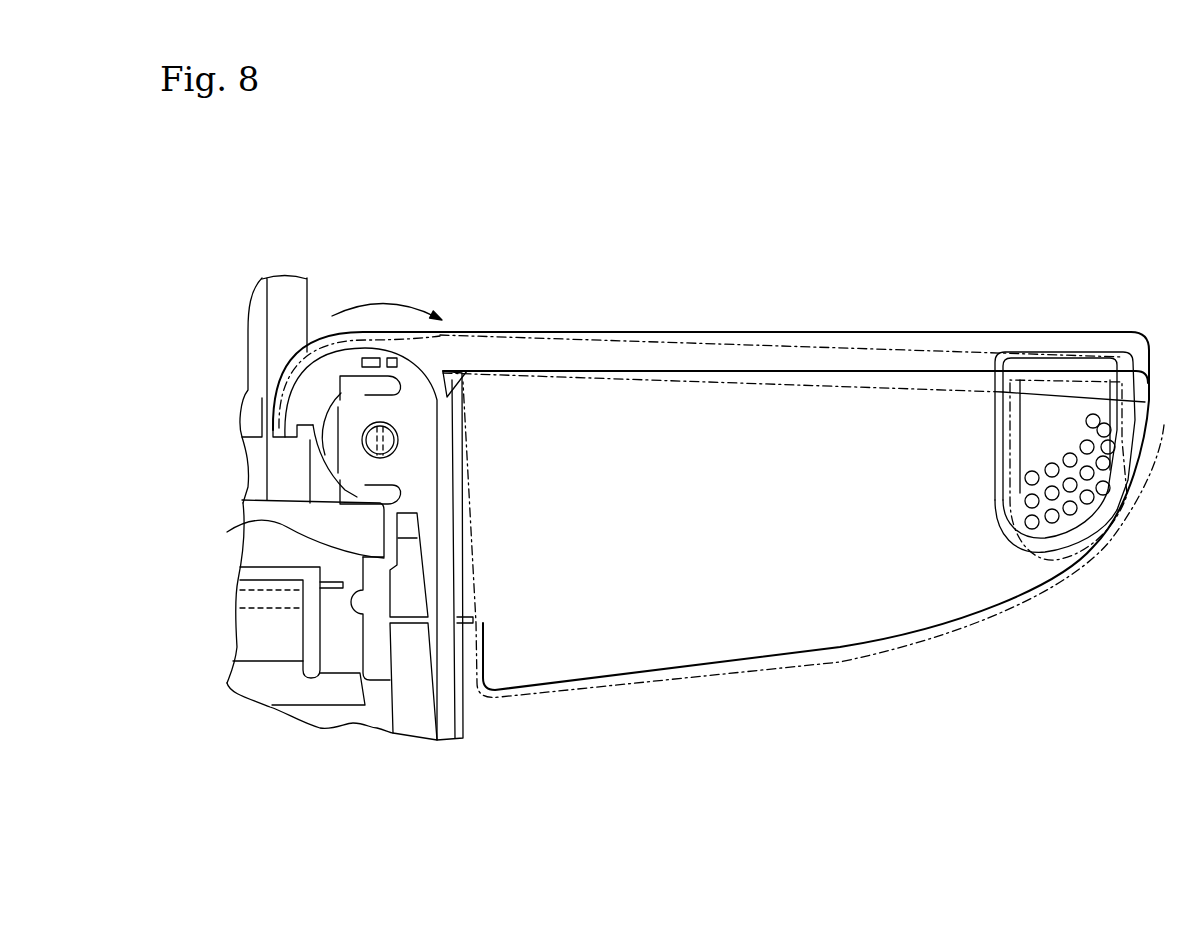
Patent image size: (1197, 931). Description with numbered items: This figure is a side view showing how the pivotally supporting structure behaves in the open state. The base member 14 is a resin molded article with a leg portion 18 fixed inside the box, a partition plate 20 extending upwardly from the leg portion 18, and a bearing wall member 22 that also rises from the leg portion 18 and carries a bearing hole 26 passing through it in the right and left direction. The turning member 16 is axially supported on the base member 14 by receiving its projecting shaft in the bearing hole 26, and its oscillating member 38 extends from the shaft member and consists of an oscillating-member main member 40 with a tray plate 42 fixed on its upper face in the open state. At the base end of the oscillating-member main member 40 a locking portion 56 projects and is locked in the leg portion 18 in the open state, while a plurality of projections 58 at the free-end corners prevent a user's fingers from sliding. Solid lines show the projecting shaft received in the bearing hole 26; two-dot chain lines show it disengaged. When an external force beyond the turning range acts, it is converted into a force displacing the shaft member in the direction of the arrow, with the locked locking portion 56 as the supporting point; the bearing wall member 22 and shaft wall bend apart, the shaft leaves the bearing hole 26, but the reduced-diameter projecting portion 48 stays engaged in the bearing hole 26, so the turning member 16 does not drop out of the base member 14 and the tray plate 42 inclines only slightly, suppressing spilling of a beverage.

The base member 14 is at (250, 250).
The turning member 16 is at (538, 228).
The leg portion 18 is at (467, 717).
The partition plate 20 is at (285, 302).
The bearing wall member 22 is at (300, 512).
The bearing hole 26 is at (367, 447).
The oscillating member 38 is at (1178, 243).
The oscillating-member main member 40 is at (1150, 425).
The tray plate 42 is at (1068, 333).
The projecting portion 48 is at (390, 430).
The locking portion 56 is at (467, 606).
The projection 58 is at (1087, 447).